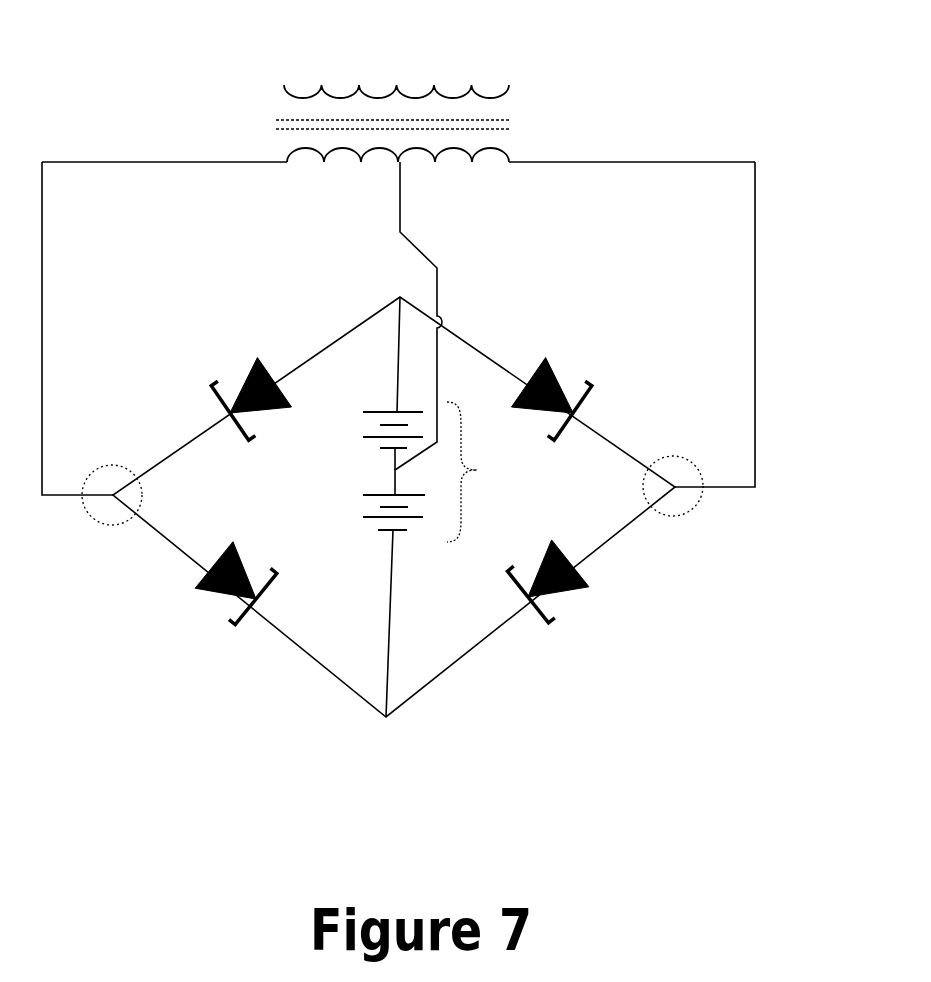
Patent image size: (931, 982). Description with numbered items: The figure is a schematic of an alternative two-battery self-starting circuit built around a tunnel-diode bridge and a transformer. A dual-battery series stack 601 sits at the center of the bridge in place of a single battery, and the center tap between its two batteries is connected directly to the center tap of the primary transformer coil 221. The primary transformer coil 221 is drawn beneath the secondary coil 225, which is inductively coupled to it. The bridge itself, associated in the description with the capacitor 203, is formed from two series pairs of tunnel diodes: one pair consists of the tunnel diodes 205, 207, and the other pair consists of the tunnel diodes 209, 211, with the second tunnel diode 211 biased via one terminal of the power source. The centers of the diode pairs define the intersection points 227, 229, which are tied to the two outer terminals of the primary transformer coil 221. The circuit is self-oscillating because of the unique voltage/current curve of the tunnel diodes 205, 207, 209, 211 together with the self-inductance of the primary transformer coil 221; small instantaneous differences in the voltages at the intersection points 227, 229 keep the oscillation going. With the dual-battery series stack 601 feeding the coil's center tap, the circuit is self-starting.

The secondary coil 225 is at (395, 83).
The primary transformer coil 221 is at (507, 155).
The capacitor 203 is at (282, 474).
The tunnel diode 205 is at (265, 375).
The tunnel diode 207 is at (216, 556).
The tunnel diode 209 is at (530, 377).
The tunnel diode 211 is at (548, 540).
The dual-battery series stack 601 is at (443, 472).
The intersection point 227 is at (93, 517).
The intersection point 229 is at (692, 508).